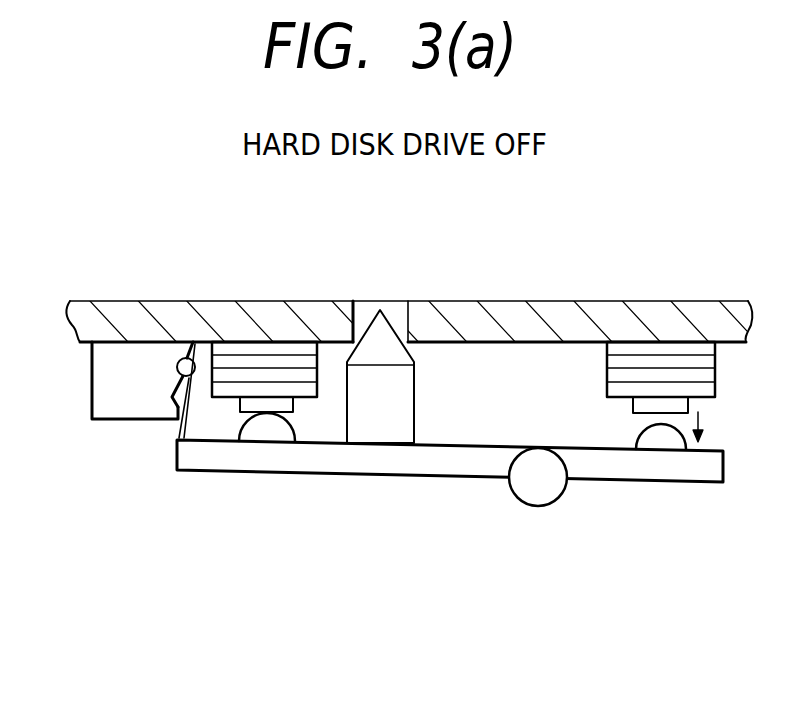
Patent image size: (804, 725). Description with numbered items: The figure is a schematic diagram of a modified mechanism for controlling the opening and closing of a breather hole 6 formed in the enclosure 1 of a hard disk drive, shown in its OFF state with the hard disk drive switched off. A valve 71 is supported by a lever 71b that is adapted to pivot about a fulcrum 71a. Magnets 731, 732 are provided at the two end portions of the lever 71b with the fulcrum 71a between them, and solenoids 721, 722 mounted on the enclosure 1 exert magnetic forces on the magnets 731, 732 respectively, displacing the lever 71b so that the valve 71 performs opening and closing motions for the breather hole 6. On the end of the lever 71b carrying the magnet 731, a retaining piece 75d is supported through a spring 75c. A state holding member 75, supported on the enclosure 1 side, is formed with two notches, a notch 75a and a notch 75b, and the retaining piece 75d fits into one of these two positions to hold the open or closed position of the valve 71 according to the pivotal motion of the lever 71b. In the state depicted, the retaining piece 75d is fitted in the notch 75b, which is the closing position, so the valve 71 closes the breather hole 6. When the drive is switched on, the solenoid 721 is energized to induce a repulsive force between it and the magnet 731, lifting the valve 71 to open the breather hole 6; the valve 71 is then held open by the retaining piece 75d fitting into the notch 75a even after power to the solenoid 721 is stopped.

The enclosure 1 is at (490, 308).
The breather hole 6 is at (378, 342).
The valve 71 is at (354, 302).
The fulcrum 71a is at (543, 488).
The lever 71b is at (445, 460).
The solenoid 721 is at (267, 360).
The solenoid 722 is at (658, 360).
The magnet 731 is at (267, 434).
The magnet 732 is at (662, 440).
The state holding member 75 is at (123, 353).
The notch 75a is at (170, 393).
The notch 75b is at (177, 364).
The spring 75c is at (177, 432).
The retaining piece 75d is at (190, 356).